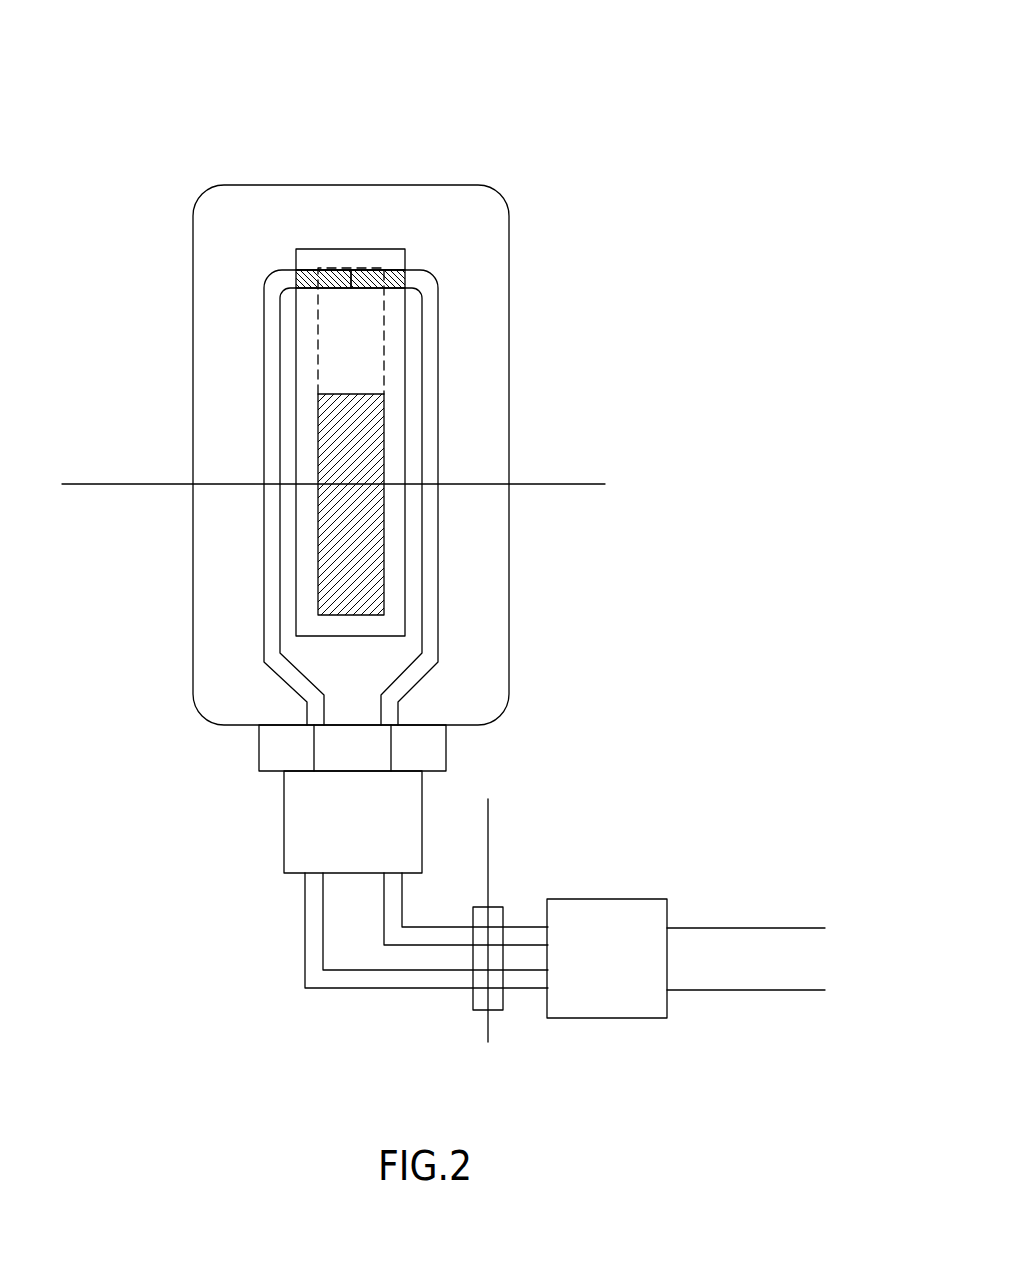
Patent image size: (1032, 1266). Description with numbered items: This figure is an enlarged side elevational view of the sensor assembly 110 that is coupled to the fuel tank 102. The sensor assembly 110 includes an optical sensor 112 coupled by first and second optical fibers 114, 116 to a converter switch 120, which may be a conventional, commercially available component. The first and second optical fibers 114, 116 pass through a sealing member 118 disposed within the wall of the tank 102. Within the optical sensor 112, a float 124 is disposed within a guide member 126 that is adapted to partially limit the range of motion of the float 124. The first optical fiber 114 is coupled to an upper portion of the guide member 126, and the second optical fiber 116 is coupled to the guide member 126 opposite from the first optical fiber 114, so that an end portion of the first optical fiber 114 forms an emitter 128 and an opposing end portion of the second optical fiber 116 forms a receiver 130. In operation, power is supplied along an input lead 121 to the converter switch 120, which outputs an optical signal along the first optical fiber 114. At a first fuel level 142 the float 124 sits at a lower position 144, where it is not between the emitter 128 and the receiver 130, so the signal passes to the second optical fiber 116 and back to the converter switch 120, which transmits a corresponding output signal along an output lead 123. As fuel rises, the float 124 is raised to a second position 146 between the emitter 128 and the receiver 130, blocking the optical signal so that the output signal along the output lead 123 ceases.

The sensor assembly 110 is at (542, 72).
The optical sensor 112 is at (509, 596).
The first optical fiber 114 is at (264, 390).
The second optical fiber 116 is at (438, 390).
The sealing member 118 is at (472, 997).
The converter switch 120 is at (607, 899).
The input lead 121 is at (807, 928).
The output lead 123 is at (807, 990).
The float 124 is at (373, 458).
The guide member 126 is at (353, 249).
The emitter 128 is at (297, 272).
The receiver 130 is at (405, 272).
The first fuel level 142 is at (175, 484).
The lower position 144 is at (310, 532).
The second position 146 is at (308, 327).
The tank 102 is at (488, 883).